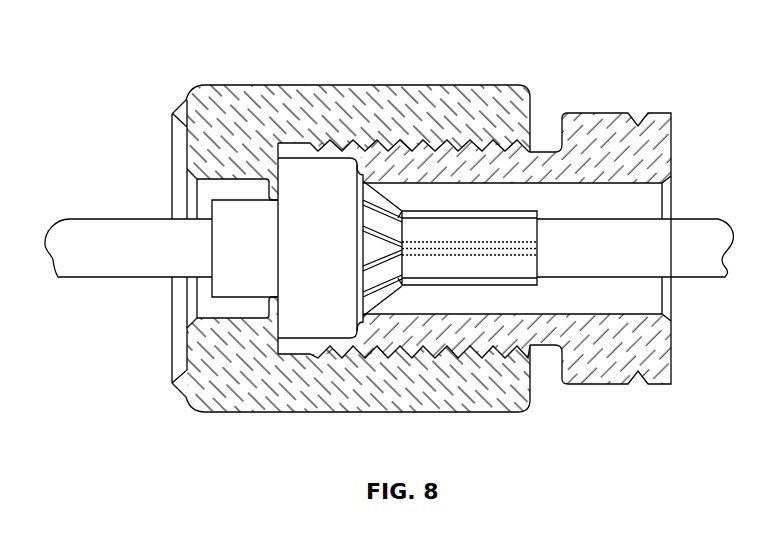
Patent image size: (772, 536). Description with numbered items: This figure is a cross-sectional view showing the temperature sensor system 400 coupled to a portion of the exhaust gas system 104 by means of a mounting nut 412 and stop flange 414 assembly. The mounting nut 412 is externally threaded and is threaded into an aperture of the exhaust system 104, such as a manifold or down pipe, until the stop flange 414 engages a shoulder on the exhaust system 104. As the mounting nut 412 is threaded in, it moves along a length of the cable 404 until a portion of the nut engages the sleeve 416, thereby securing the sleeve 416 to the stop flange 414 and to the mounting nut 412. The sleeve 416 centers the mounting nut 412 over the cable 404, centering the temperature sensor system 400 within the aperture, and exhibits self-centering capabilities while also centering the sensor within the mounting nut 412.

The temperature sensor system 400 is at (121, 105).
The exhaust gas system 104 is at (263, 385).
The cable 404 is at (118, 259).
The mounting nut 412 is at (600, 137).
The stop flange 414 is at (300, 188).
The sleeve 416 is at (453, 272).